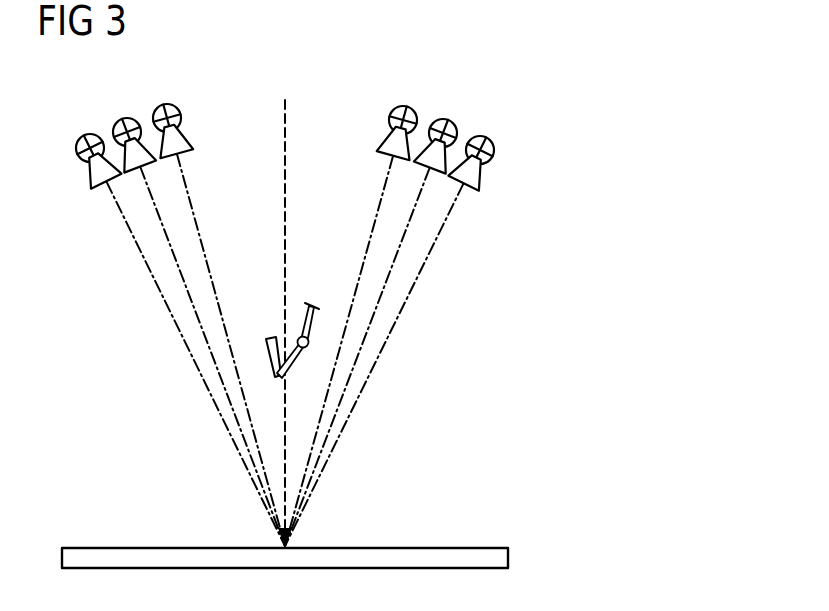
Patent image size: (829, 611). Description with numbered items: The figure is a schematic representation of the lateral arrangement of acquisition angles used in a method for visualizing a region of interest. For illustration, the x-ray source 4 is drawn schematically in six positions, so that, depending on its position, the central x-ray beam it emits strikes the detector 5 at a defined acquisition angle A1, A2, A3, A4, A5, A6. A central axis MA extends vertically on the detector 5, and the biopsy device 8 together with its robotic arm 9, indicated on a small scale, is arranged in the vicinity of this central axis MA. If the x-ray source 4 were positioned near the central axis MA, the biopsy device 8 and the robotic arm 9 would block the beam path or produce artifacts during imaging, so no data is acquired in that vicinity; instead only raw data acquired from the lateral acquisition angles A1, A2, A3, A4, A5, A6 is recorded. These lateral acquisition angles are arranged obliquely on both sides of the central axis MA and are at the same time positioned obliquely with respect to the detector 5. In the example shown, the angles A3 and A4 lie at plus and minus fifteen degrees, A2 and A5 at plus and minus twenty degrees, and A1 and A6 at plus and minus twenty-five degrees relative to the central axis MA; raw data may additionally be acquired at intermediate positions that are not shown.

The x-ray source 4 is at (80, 138).
The detector 5 is at (466, 558).
The biopsy device 8 is at (268, 340).
The robotic arm 9 is at (314, 308).
The central axis MA is at (283, 118).
The acquisition angle A1 is at (159, 292).
The acquisition angle A2 is at (155, 208).
The acquisition angle A3 is at (200, 232).
The acquisition angle A4 is at (372, 232).
The acquisition angle A5 is at (414, 207).
The acquisition angle A6 is at (411, 292).